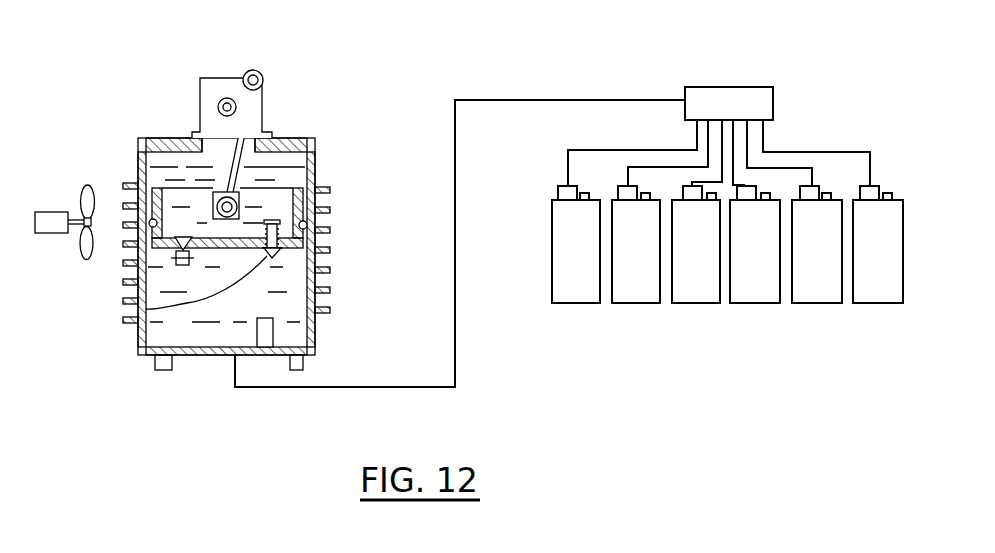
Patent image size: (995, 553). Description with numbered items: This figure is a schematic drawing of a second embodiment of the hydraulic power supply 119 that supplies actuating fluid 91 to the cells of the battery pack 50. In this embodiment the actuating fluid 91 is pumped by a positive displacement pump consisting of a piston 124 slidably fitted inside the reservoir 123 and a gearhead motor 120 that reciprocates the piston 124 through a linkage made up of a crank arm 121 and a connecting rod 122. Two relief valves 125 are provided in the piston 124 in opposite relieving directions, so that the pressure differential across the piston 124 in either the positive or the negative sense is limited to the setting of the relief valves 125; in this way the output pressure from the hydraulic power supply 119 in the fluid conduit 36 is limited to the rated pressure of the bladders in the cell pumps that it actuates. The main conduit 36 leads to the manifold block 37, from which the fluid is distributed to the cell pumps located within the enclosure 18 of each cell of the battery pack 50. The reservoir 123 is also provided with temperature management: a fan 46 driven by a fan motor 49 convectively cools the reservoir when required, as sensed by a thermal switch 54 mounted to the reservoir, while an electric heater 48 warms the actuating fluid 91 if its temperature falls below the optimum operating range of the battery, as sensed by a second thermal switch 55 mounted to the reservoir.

The hydraulic power supply 119 is at (335, 120).
The reservoir 123 is at (316, 172).
The actuating fluid 91 is at (175, 166).
The connecting rod 122 is at (257, 97).
The gearhead motor 120 is at (207, 90).
The crank arm 121 is at (243, 77).
The relief valves 125 is at (182, 255).
The piston 124 is at (274, 257).
The electric heater 48 is at (267, 318).
The thermal switch 54 is at (160, 368).
The thermal switch 55 is at (302, 377).
The fan motor 49 is at (55, 220).
The fan 46 is at (88, 259).
The main conduit 36 is at (553, 100).
The manifold block 37 is at (708, 103).
The battery pack 50 is at (727, 289).
The enclosure 18 is at (882, 300).